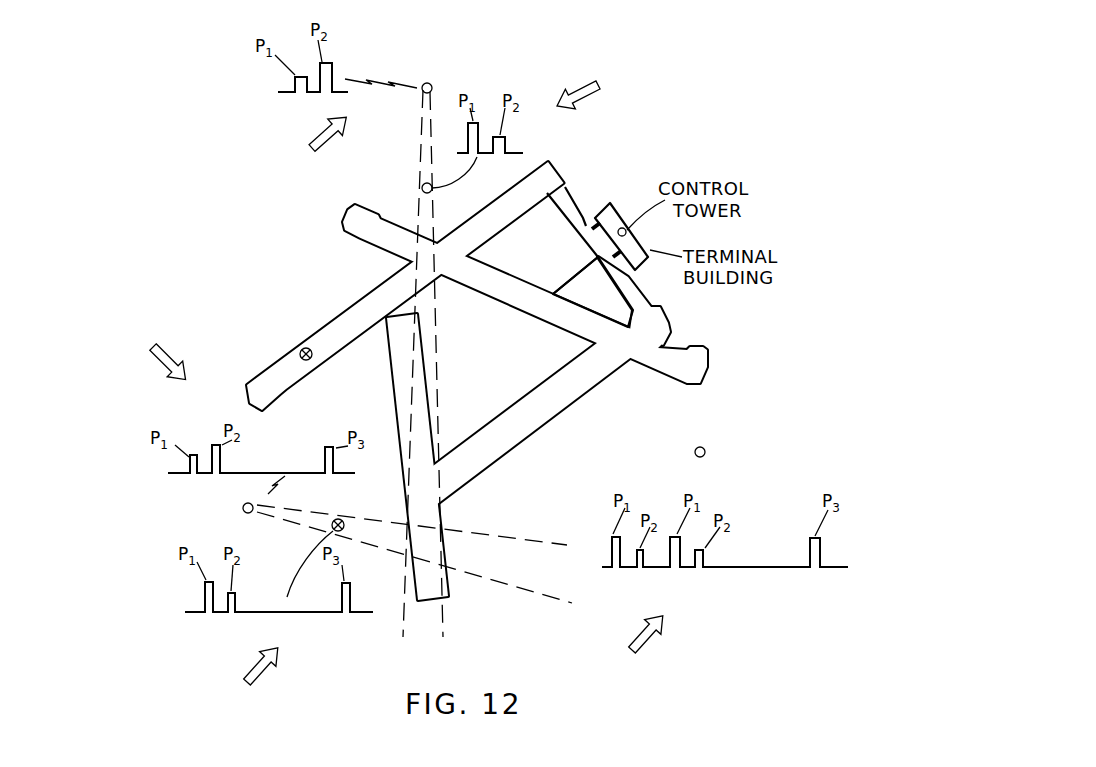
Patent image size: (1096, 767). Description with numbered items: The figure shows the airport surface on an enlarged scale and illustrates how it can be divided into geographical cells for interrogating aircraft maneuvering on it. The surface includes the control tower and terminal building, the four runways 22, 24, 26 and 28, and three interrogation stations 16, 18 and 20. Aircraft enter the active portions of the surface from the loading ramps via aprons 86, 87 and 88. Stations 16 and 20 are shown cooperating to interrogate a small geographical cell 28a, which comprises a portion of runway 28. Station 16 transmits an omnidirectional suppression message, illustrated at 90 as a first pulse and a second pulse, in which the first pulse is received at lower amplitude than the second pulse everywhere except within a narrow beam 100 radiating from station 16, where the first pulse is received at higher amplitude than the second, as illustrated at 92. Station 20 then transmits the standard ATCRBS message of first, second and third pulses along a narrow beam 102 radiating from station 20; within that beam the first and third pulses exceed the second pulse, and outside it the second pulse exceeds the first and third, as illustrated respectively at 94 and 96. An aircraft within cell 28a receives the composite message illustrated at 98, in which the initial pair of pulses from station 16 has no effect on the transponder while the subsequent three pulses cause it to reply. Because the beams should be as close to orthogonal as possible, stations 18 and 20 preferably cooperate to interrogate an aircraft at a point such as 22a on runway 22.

The station 16 is at (432, 84).
The station 18 is at (705, 449).
The station 20 is at (243, 508).
The runway 22 is at (292, 373).
The point 22a is at (302, 349).
The runway 24 is at (577, 387).
The runway 26 is at (497, 303).
The runway 28 is at (402, 403).
The geographical cell 28a is at (427, 535).
The apron 86 is at (574, 205).
The apron 87 is at (640, 290).
The apron 88 is at (585, 270).
The suppression message illustration 90 is at (314, 137).
The suppression message illustration within beam 92 is at (590, 92).
The ATCRBS message illustration within beam 94 is at (253, 671).
The ATCRBS message illustration outside beam 96 is at (157, 355).
The composite message illustration 98 is at (638, 642).
The narrow beam 100 is at (437, 378).
The narrow beam 102 is at (517, 585).